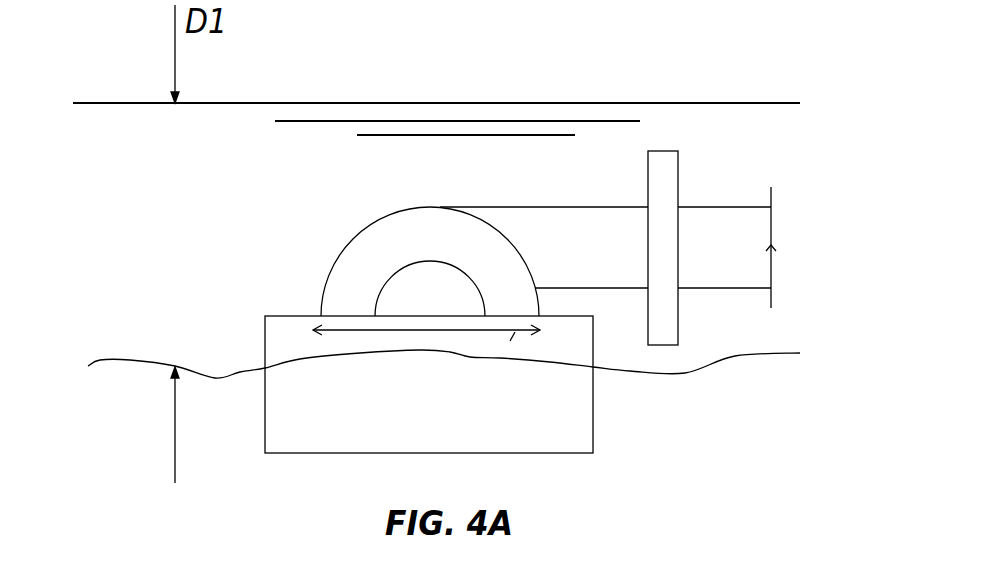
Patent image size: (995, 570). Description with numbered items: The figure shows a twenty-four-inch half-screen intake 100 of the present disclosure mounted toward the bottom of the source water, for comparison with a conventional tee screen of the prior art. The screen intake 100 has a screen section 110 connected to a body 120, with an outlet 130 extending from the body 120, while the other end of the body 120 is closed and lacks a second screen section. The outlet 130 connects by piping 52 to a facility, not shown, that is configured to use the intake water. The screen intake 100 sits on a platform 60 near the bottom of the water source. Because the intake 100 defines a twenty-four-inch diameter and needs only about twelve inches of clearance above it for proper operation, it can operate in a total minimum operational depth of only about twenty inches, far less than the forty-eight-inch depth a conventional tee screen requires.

The screen intake 100 is at (171, 219).
The screen section 110 is at (407, 245).
The body 120 is at (389, 212).
The outlet 130 is at (553, 207).
The piping 52 is at (730, 207).
The platform 60 is at (593, 425).